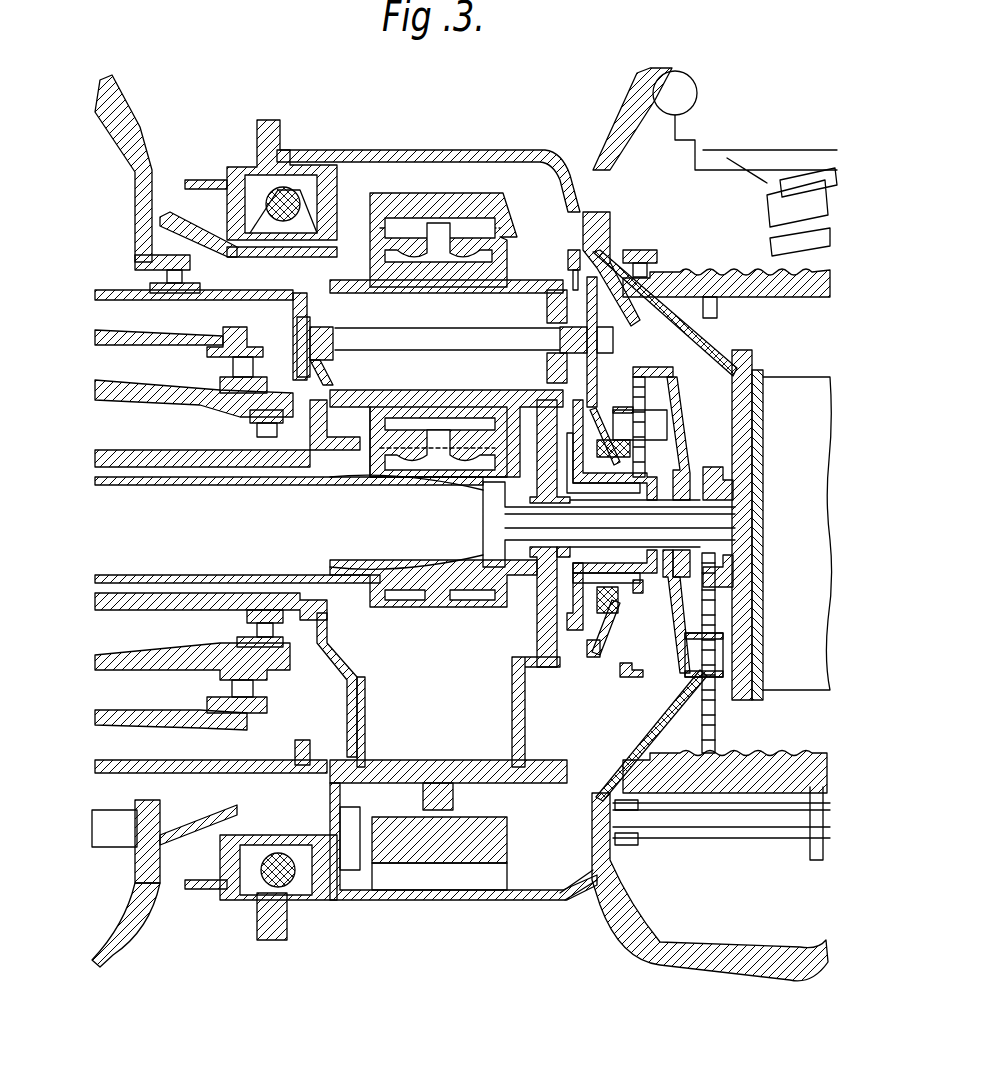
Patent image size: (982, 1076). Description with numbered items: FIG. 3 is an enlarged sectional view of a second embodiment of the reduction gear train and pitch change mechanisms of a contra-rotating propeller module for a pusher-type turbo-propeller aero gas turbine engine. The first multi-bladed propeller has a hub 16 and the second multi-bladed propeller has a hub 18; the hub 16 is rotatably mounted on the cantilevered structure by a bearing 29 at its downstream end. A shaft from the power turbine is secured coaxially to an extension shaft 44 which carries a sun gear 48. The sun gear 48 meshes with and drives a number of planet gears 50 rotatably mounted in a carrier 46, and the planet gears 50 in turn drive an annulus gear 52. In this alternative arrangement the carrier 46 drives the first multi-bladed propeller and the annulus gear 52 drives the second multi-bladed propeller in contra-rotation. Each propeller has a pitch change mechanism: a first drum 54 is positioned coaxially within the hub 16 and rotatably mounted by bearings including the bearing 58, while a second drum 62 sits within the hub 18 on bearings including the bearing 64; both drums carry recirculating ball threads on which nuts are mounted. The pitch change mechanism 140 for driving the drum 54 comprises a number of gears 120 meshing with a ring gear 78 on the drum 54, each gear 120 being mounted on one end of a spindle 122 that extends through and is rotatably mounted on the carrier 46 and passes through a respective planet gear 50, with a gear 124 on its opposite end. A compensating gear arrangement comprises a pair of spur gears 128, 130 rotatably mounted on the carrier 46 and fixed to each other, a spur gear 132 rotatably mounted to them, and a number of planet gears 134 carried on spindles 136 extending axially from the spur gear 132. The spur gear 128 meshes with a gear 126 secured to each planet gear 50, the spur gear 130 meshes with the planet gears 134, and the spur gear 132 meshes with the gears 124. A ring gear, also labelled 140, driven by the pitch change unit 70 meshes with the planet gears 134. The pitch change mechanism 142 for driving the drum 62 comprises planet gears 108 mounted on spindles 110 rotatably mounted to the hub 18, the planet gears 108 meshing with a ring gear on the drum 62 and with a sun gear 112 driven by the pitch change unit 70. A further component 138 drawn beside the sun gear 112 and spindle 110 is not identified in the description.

The hub 16 is at (128, 123).
The hub 18 is at (612, 100).
The bearing 29 is at (232, 367).
The extension shaft 44 is at (258, 488).
The carrier 46 is at (170, 450).
The sun gear 48 is at (413, 610).
The planet gears 50 is at (405, 405).
The annulus gear 52 is at (400, 210).
The first drum 54 is at (126, 302).
The bearing 58 is at (183, 276).
The second drum 62 is at (700, 272).
The bearing 64 is at (648, 250).
The pitch change unit 70 is at (782, 525).
The ring gear 78 is at (306, 740).
The planet gears 108 is at (735, 597).
The spindle 110 is at (725, 657).
The sun gear 112 is at (735, 478).
The gears 120 is at (335, 330).
The spindle 122 is at (425, 342).
The gear 124 is at (560, 330).
The gear 126 is at (574, 250).
The spur gear 128 is at (576, 632).
The spur gear 130 is at (638, 595).
The spur gear 132 is at (597, 385).
The planet gears 134 is at (670, 400).
The spindles 136 is at (660, 425).
The splined shaft 138 is at (718, 607).
The pitch change mechanism 140 is at (622, 666).
The pitch change mechanism 142 is at (741, 725).